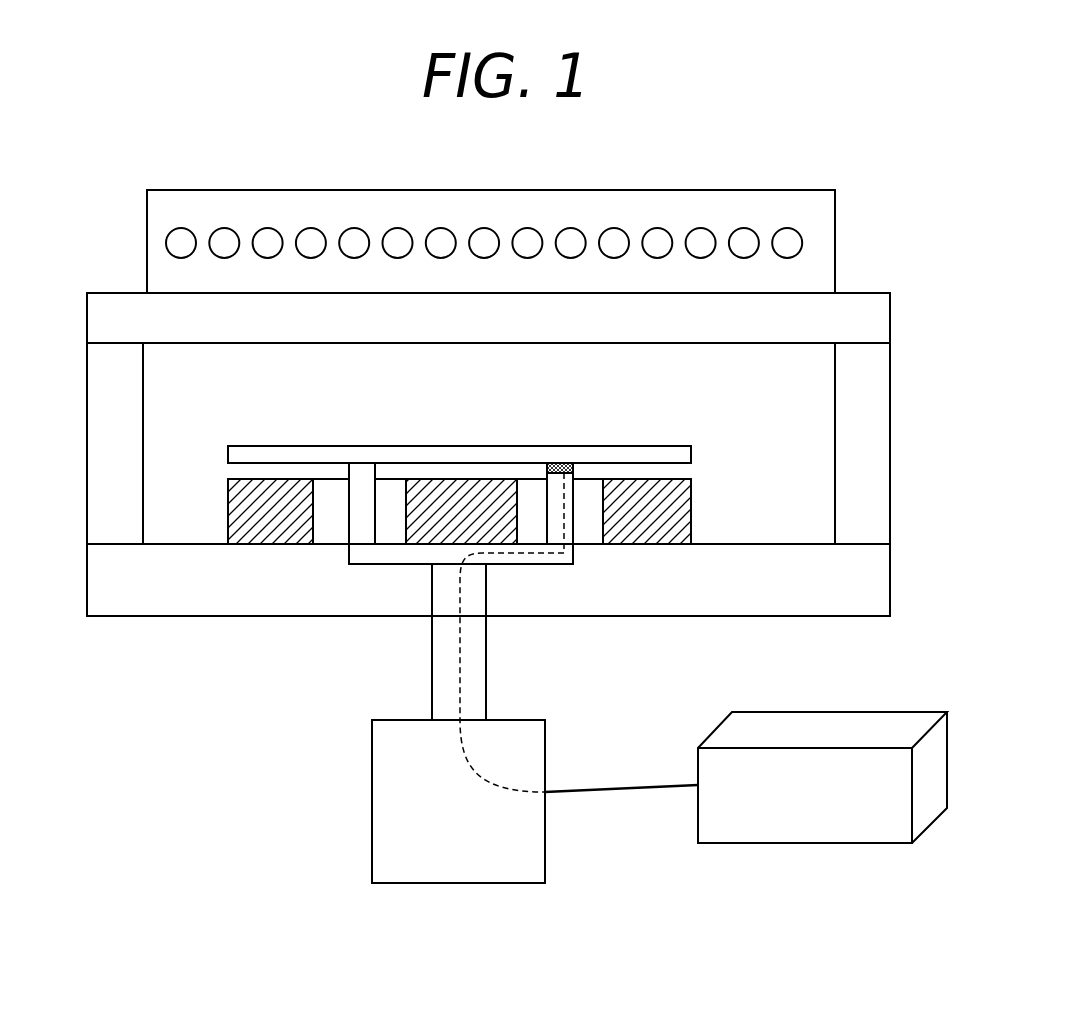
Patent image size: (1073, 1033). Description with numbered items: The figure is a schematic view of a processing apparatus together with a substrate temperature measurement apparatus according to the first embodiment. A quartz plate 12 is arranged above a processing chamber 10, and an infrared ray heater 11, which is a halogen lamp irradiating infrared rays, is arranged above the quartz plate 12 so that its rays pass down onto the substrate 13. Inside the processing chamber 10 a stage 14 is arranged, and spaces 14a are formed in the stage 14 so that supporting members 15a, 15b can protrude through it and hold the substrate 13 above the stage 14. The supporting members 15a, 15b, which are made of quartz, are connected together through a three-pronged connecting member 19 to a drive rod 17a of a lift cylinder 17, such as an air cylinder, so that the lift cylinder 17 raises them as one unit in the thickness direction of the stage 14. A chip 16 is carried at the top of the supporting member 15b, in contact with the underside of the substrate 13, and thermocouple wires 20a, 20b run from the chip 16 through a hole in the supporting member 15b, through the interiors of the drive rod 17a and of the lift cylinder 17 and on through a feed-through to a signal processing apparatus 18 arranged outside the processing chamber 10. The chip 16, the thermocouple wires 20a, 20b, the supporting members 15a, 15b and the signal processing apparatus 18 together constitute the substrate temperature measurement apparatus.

The processing chamber 10 is at (810, 420).
The infrared ray heater 11 is at (565, 212).
The quartz plate 12 is at (865, 320).
The substrate 13 is at (457, 455).
The stage 14 is at (680, 518).
The spaces 14a is at (333, 522).
The supporting member 15a is at (362, 485).
The supporting member 15b is at (557, 530).
The chip 16 is at (558, 465).
The lift cylinder 17 is at (433, 803).
The drive rod 17a is at (440, 691).
The signal processing apparatus 18 is at (817, 817).
The connecting member 19 is at (392, 558).
The thermocouple wire 20a is at (620, 835).
The thermocouple wire 20b is at (598, 897).